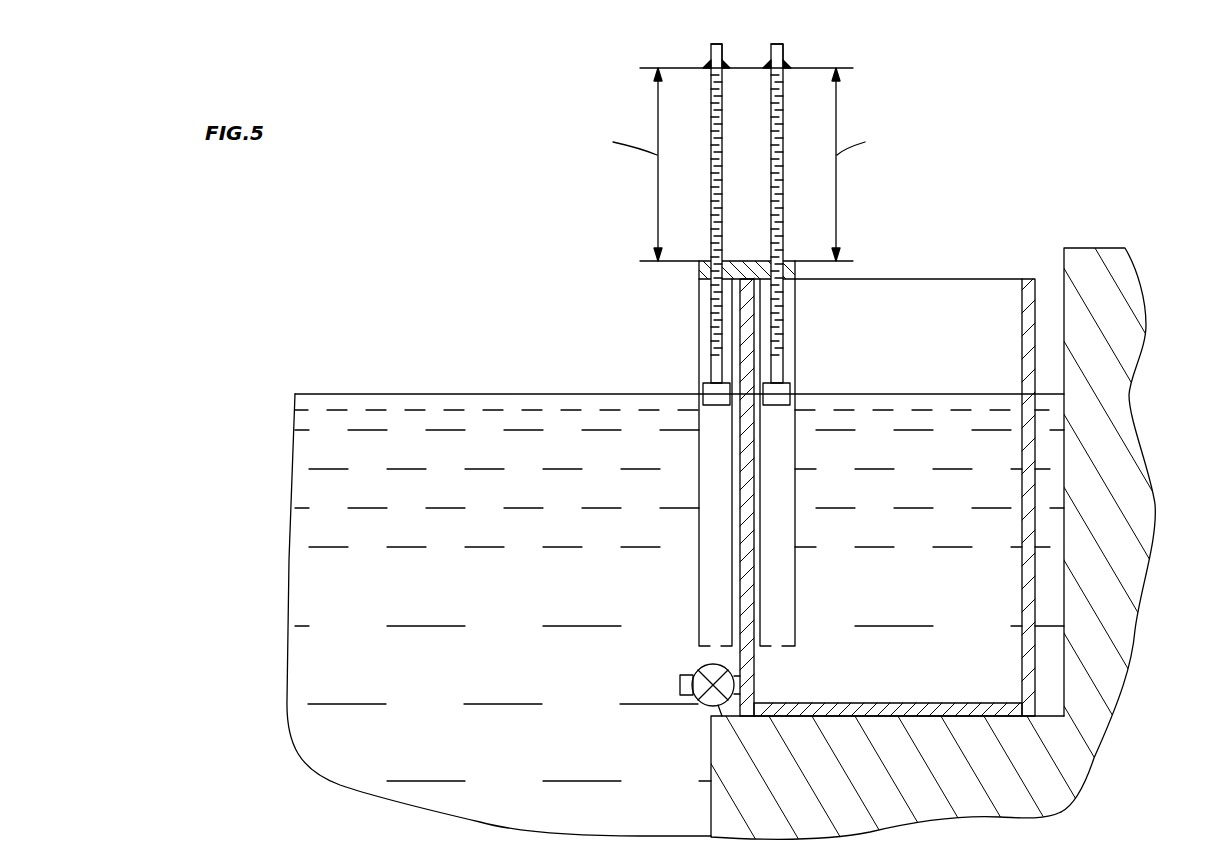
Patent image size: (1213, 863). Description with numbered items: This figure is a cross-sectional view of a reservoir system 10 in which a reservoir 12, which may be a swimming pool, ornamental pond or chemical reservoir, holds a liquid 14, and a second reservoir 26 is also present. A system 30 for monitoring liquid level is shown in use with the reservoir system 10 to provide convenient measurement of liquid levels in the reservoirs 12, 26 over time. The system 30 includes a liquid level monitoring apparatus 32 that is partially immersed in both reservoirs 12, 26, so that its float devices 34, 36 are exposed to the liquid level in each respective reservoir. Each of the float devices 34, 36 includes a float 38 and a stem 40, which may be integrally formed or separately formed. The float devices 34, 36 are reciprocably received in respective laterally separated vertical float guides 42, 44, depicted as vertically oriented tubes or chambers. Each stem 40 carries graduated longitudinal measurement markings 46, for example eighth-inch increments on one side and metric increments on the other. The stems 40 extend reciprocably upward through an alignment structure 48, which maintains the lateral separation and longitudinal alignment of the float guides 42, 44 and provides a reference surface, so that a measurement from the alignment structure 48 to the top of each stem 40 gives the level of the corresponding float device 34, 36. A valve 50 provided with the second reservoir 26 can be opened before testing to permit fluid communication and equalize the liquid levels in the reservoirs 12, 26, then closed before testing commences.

The reservoir system 10 is at (1137, 131).
The reservoir 12 is at (1064, 262).
The liquid 14 is at (402, 394).
The second reservoir 26 is at (1022, 298).
The system for monitoring liquid level 30 is at (596, 279).
The liquid level monitoring apparatus 32 is at (800, 337).
The float device 34 is at (705, 315).
The float device 36 is at (789, 302).
The float 38 is at (703, 388).
The stem 40 is at (771, 90).
The float guide 42 is at (699, 576).
The float guide 44 is at (795, 593).
The graduated longitudinal measurement markings 46 is at (712, 102).
The alignment structure 48 is at (699, 268).
The valve 50 is at (722, 718).